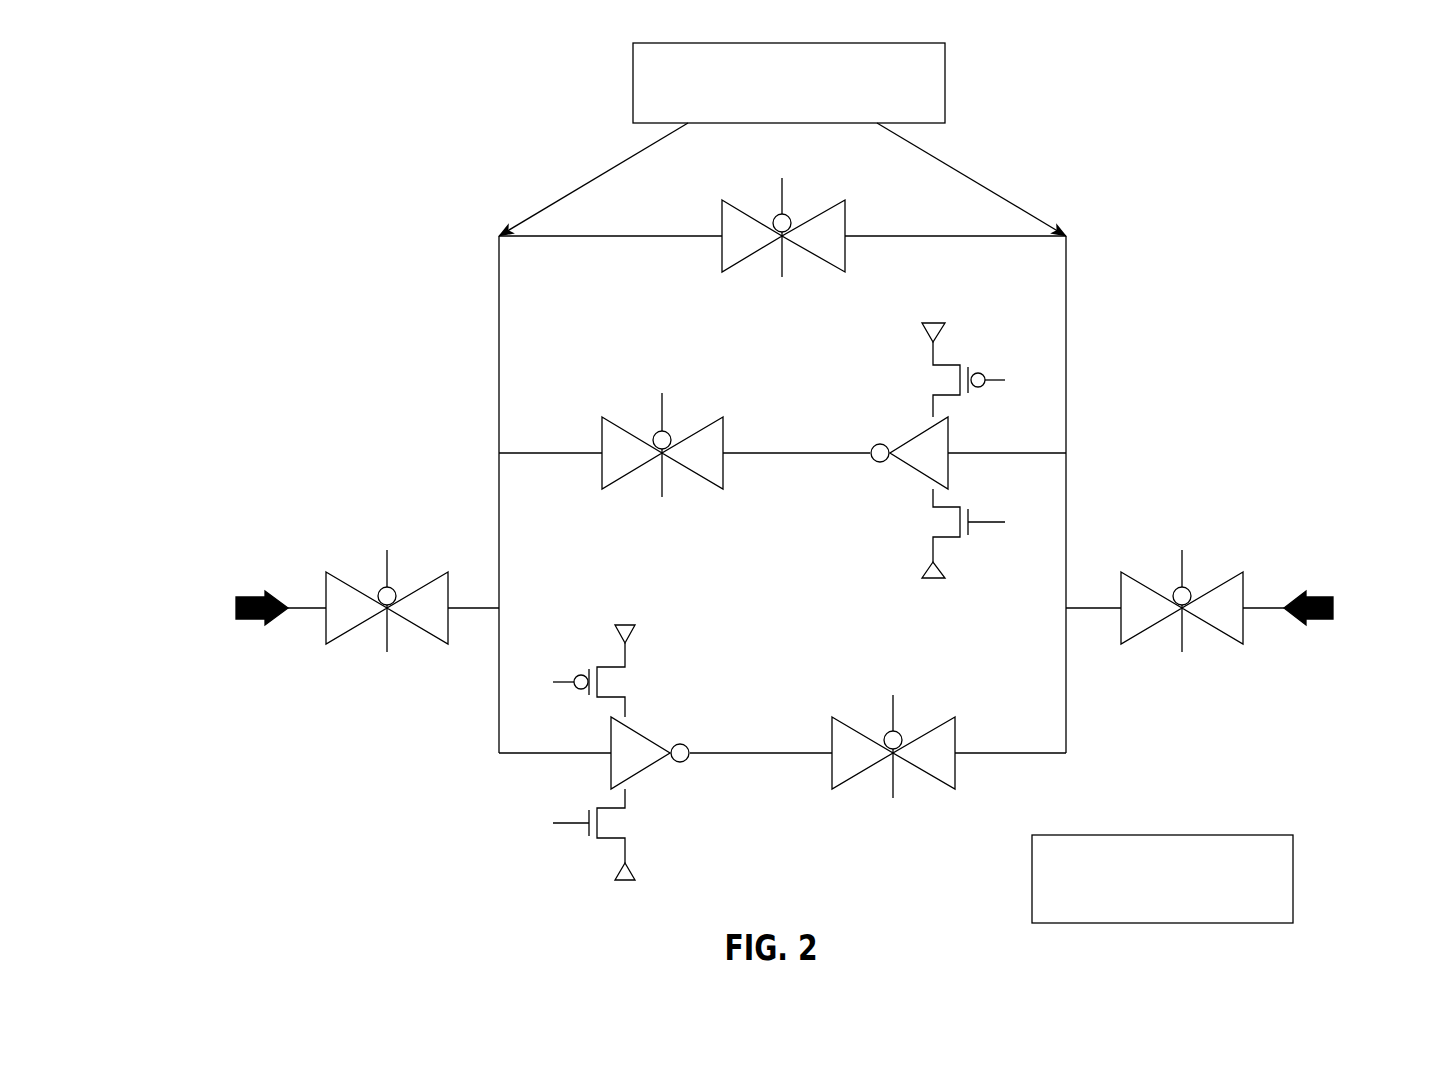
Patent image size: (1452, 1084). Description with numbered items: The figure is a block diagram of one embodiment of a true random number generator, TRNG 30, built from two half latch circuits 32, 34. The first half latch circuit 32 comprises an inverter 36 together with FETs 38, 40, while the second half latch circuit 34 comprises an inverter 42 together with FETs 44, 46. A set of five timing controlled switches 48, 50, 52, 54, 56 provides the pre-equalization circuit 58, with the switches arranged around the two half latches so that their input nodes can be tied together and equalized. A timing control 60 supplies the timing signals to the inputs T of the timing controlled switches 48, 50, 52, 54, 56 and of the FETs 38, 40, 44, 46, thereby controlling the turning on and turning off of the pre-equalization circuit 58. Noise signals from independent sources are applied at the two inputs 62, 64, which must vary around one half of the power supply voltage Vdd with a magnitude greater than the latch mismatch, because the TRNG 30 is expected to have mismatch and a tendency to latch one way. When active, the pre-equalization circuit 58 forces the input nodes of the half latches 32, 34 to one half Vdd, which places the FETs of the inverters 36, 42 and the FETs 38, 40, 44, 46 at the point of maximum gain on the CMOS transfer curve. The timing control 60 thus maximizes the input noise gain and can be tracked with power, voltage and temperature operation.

The TRNG 30 is at (1242, 147).
The half latch circuit 32 is at (670, 747).
The half latch circuit 34 is at (889, 443).
The inverter 36 is at (646, 770).
The FET 38 is at (612, 667).
The FET 40 is at (611, 838).
The inverter 42 is at (913, 472).
The FET 44 is at (947, 365).
The FET 46 is at (947, 540).
The timing controlled switch 48 is at (769, 262).
The timing controlled switch 50 is at (649, 484).
The timing controlled switch 52 is at (881, 782).
The timing controlled switch 54 is at (404, 632).
The timing controlled switch 56 is at (1168, 632).
The pre-equalization circuit 58 is at (775, 115).
The timing control 60 is at (1152, 910).
The input 62 is at (256, 597).
The input 64 is at (1317, 597).